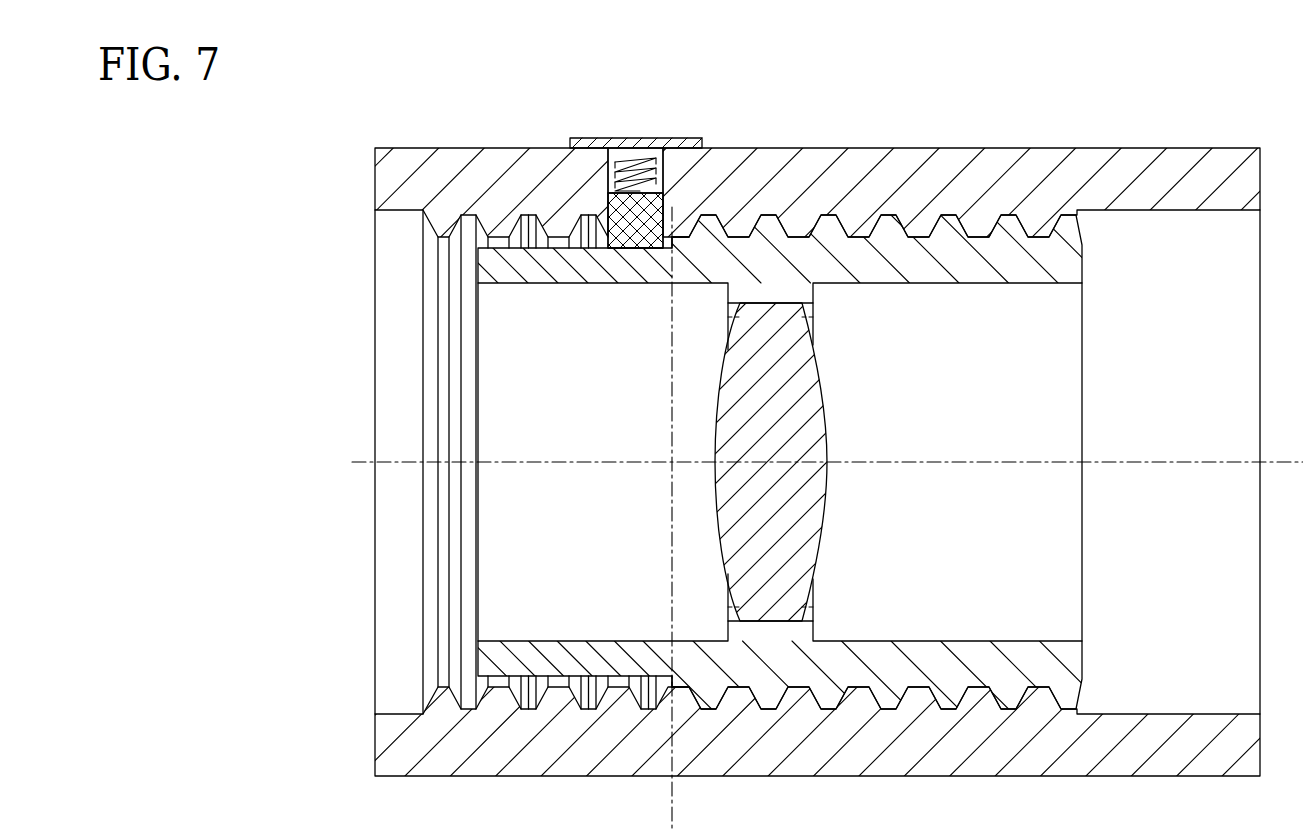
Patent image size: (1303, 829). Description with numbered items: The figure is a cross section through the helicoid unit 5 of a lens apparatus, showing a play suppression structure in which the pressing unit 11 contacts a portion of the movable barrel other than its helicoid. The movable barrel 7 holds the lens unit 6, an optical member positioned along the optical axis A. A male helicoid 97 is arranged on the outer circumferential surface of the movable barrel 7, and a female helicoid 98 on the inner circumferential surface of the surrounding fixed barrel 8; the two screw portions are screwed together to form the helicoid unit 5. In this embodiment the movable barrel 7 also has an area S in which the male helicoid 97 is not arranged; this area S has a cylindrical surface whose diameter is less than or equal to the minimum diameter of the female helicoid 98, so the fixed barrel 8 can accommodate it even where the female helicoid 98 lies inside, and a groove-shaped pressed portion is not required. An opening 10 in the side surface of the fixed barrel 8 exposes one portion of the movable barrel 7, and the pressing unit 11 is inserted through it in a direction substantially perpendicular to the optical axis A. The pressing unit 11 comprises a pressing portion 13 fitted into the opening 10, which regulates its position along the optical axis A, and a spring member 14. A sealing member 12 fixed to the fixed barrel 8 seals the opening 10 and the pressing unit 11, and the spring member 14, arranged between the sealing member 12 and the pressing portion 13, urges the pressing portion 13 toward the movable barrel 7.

The helicoid unit 5 is at (354, 90).
The lens unit 6 is at (771, 612).
The movable barrel 7 is at (1017, 252).
The fixed barrel 8 is at (1176, 168).
The opening 10 is at (608, 181).
The pressing unit 11 is at (708, 71).
The sealing member 12 is at (604, 139).
The pressing portion 13 is at (664, 210).
The spring member 14 is at (656, 168).
The male helicoid 97 is at (674, 237).
The female helicoid 98 is at (448, 232).
The area in which the male helicoid is not arranged S is at (522, 242).
The optical axis A is at (368, 466).